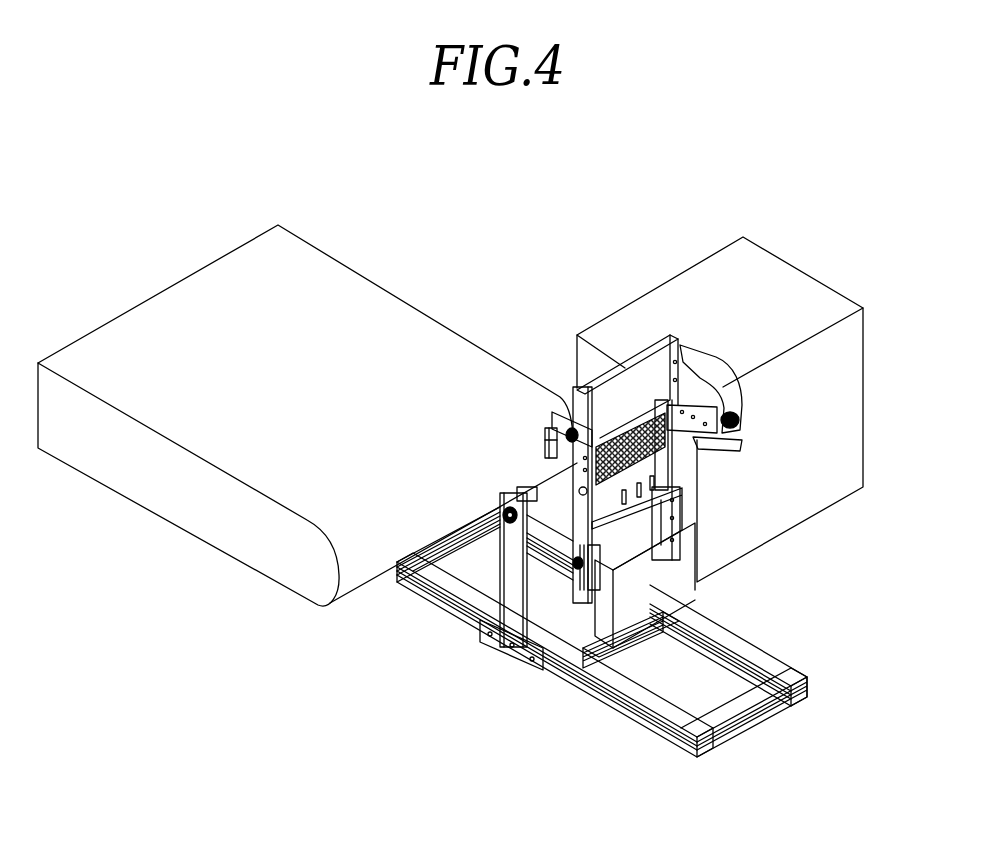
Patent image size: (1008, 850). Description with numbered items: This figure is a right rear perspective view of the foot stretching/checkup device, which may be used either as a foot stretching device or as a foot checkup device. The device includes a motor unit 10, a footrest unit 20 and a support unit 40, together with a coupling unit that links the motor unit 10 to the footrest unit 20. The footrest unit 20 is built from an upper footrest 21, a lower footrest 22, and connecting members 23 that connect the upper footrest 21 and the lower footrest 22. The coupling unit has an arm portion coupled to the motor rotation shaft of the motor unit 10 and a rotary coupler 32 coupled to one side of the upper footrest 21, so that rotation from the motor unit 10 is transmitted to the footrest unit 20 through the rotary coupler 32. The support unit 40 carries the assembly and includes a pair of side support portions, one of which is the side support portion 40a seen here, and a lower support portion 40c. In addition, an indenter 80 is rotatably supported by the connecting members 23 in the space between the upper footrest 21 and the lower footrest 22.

The motor unit 10 is at (792, 273).
The footrest unit 20 is at (686, 470).
The upper footrest 21 is at (643, 522).
The lower footrest 22 is at (657, 393).
The connecting members 23 is at (578, 502).
The rotary coupler 32 is at (693, 383).
The support unit 40 is at (602, 637).
The side support portion 40a is at (512, 612).
The lower support portion 40c is at (623, 625).
The indenter 80 is at (632, 433).